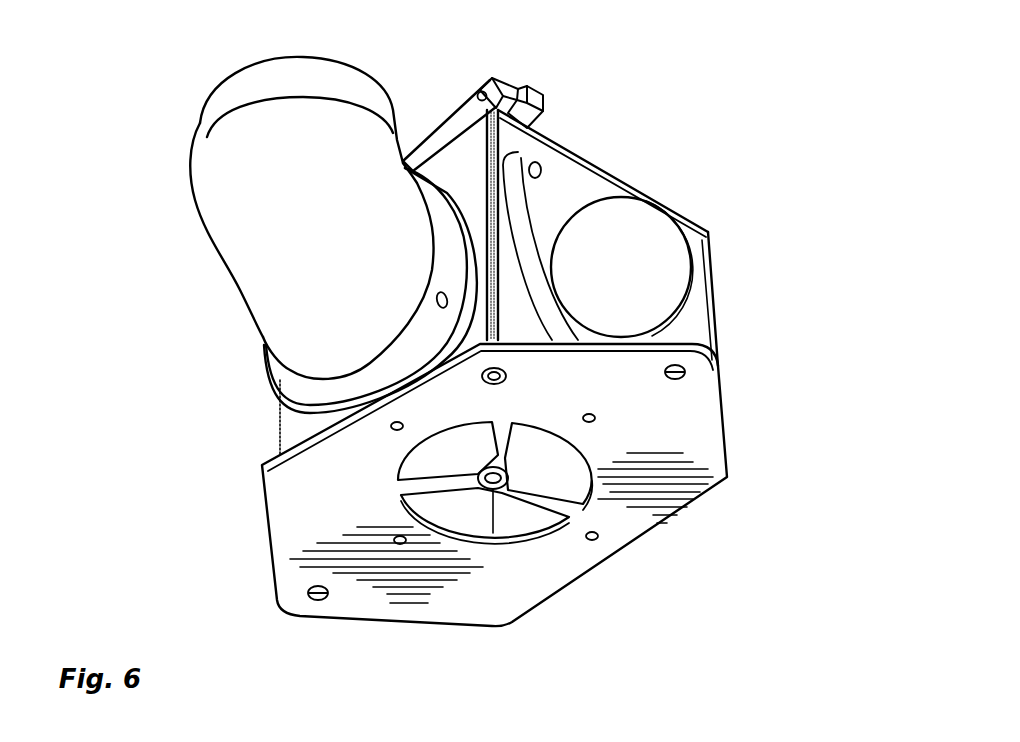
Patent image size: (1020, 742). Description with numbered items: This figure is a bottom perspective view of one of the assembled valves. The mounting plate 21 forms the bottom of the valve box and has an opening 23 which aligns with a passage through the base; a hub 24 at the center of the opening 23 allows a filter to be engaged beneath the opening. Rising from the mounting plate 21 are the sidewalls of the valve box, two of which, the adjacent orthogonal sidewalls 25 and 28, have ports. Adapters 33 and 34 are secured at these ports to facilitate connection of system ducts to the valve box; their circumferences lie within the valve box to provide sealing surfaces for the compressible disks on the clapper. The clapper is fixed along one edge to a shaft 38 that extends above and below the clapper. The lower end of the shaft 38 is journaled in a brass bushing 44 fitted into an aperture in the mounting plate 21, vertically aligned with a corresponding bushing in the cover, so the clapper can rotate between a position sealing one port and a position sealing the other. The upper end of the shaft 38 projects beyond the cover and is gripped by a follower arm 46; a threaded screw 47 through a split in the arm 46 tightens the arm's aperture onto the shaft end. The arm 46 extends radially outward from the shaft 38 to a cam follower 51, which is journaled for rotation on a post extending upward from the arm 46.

The mounting plate 21 is at (632, 494).
The opening 23 is at (408, 470).
The hub 24 is at (494, 448).
The sidewall 25 is at (292, 425).
The sidewall 28 is at (695, 240).
The adapter 33 is at (267, 250).
The adapter 34 is at (573, 180).
The shaft 38 is at (500, 370).
The brass bushing 44 is at (481, 380).
The follower arm 46 is at (530, 90).
The threaded screw 47 is at (480, 90).
The cam follower 51 is at (416, 130).